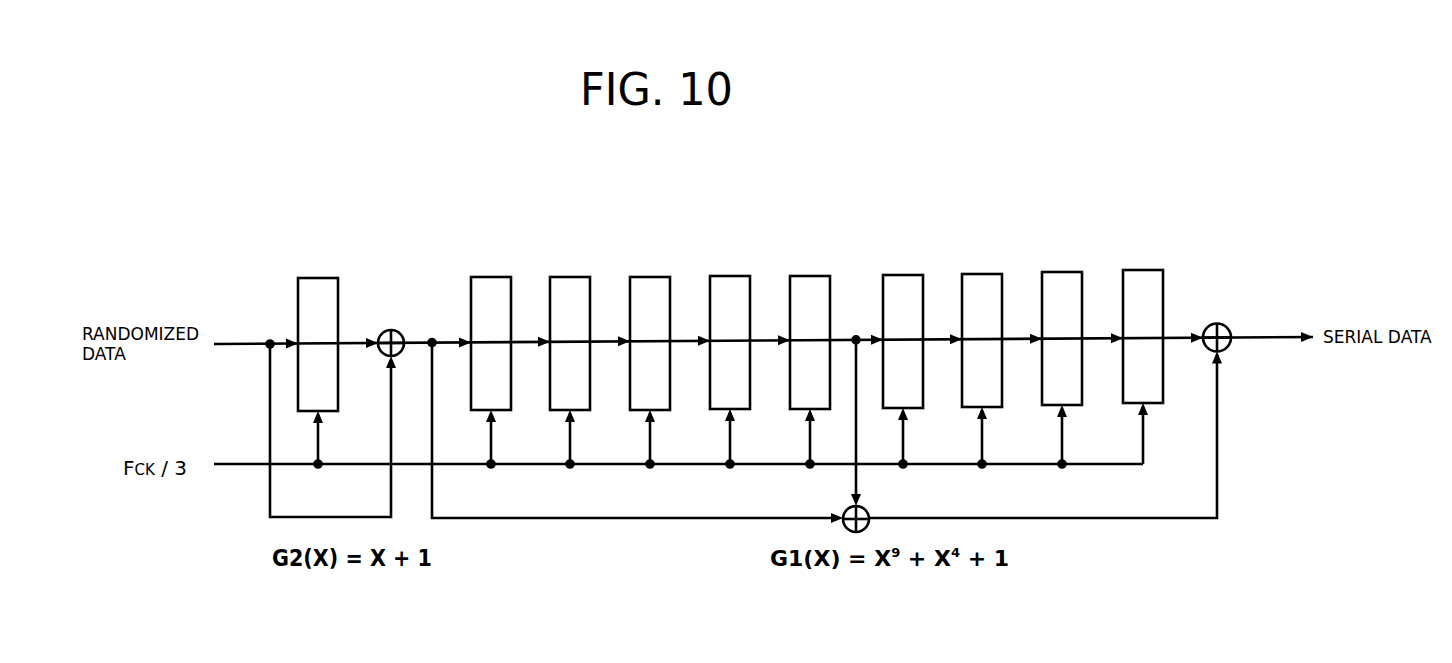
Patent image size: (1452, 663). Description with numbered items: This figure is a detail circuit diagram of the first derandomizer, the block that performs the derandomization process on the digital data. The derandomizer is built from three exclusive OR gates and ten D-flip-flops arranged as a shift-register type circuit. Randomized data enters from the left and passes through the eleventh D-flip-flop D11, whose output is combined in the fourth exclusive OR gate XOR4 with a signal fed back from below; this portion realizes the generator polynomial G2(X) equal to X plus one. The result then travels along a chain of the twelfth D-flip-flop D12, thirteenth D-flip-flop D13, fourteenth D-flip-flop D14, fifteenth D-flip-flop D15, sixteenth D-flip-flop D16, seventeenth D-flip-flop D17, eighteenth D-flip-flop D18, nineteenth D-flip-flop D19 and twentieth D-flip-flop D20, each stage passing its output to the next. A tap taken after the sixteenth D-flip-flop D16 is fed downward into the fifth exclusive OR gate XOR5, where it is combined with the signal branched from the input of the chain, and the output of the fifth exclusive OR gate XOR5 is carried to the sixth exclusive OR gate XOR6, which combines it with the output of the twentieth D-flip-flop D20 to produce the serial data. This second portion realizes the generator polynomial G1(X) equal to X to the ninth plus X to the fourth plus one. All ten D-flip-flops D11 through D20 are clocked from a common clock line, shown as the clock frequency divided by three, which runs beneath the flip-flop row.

The eleventh D-flip-flop D11 is at (320, 278).
The twelfth D-flip-flop D12 is at (493, 277).
The thirteenth D-flip-flop D13 is at (572, 277).
The fourteenth D-flip-flop D14 is at (652, 277).
The fifteenth D-flip-flop D15 is at (732, 276).
The sixteenth D-flip-flop D16 is at (812, 276).
The seventeenth D-flip-flop D17 is at (905, 275).
The eighteenth D-flip-flop D18 is at (984, 274).
The nineteenth D-flip-flop D19 is at (1064, 272).
The twentieth D-flip-flop D20 is at (1145, 270).
The fourth exclusive OR gate XOR4 is at (391, 330).
The fifth exclusive OR gate XOR5 is at (867, 508).
The sixth exclusive OR gate XOR6 is at (1217, 324).